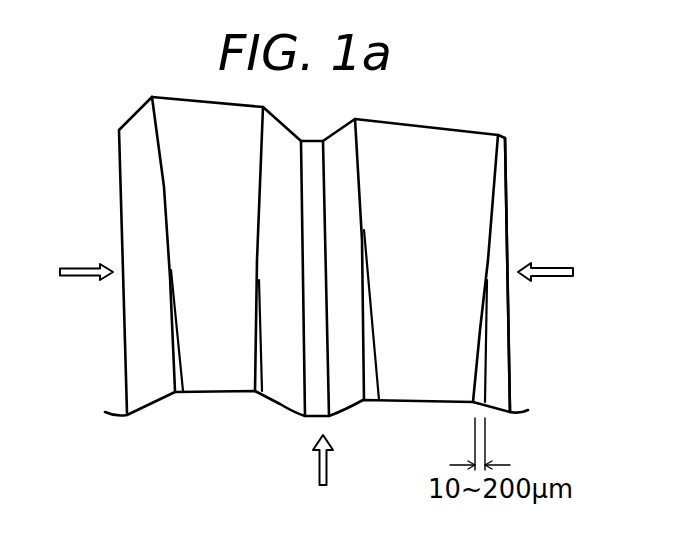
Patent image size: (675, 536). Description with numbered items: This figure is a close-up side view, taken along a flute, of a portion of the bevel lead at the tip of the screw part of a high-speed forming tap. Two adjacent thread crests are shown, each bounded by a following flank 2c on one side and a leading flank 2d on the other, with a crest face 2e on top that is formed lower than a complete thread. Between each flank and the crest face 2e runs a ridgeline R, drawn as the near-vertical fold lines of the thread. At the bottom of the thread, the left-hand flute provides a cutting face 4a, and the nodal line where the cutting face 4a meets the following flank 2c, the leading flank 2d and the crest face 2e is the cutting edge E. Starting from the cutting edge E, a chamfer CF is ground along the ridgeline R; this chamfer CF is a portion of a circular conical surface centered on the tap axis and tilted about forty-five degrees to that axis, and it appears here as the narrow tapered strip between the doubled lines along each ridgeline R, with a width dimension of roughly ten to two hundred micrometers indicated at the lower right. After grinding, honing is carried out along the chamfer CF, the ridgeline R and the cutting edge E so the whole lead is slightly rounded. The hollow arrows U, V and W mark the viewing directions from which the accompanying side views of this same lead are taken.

The following flank 2c is at (147, 358).
The leading flank 2d is at (268, 283).
The crest face 2e is at (232, 322).
The ridgeline R is at (165, 187).
The chamfer CF is at (253, 368).
The cutting edge E is at (238, 393).
The cutting face 4a is at (213, 395).
The arrow U is at (77, 273).
The arrow V is at (555, 270).
The arrow W is at (323, 478).